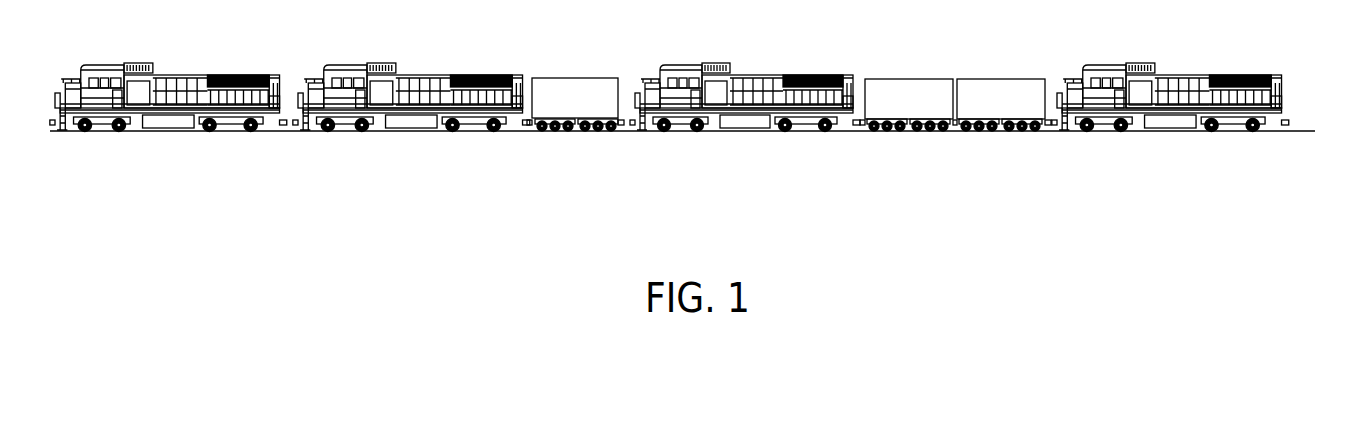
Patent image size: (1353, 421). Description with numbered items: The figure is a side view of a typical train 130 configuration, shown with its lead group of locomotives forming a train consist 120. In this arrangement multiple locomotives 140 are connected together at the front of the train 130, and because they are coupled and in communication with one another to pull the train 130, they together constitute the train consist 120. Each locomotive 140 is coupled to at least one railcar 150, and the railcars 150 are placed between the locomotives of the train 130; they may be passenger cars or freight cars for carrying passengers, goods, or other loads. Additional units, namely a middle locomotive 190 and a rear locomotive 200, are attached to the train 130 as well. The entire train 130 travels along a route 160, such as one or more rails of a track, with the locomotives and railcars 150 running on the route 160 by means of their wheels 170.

The train consist 120 is at (525, 135).
The train 130 is at (1290, 178).
The locomotive 140 is at (528, 60).
The railcar 150 is at (577, 78).
The route 160 is at (1298, 130).
The wheels 170 is at (587, 131).
The middle locomotive 190 is at (763, 70).
The rear locomotive 200 is at (1187, 70).